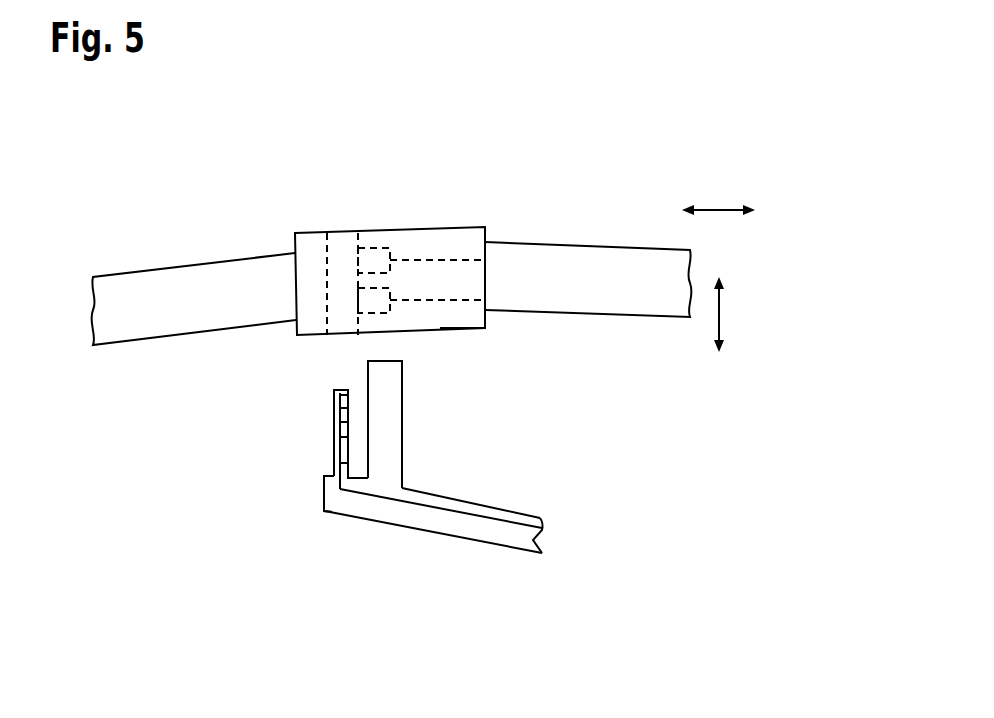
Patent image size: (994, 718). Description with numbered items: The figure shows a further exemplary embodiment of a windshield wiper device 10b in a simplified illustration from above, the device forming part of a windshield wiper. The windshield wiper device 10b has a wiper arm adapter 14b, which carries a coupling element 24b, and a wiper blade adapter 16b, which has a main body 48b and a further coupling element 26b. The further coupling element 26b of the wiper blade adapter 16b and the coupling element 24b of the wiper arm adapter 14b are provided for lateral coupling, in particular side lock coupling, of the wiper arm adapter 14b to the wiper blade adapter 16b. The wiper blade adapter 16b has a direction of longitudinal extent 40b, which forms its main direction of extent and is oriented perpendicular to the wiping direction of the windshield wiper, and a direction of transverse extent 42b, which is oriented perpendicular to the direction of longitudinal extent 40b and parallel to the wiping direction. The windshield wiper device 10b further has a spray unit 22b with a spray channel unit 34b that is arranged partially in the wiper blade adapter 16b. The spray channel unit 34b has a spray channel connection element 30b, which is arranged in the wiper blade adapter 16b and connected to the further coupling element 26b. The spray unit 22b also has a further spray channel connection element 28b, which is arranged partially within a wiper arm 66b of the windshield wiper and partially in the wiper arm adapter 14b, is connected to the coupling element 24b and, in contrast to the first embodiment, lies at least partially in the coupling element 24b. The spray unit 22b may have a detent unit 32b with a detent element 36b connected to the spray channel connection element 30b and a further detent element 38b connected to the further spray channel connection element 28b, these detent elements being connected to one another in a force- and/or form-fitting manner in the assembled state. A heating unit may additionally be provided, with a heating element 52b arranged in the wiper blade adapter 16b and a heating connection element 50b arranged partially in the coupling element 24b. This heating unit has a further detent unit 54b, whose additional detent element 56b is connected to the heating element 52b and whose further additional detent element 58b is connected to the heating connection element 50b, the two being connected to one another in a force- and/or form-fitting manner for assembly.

The windshield wiper device 10b is at (634, 128).
The wiper arm adapter 14b is at (331, 515).
The wiper blade adapter 16b is at (473, 242).
The spray unit 22b is at (403, 214).
The coupling element 24b is at (345, 395).
The further coupling element 26b is at (327, 255).
The further spray channel connection element 28b is at (338, 500).
The spray channel connection element 30b is at (440, 258).
The detent unit 32b is at (454, 410).
The spray channel unit 34b is at (462, 238).
The detent element 36b is at (343, 415).
The further detent element 38b is at (358, 250).
The direction of longitudinal extent 40b is at (718, 208).
The direction of transverse extent 42b is at (723, 313).
The main body 48b is at (472, 315).
The heating connection element 50b is at (493, 515).
The heating element 52b is at (445, 301).
The further detent unit 54b is at (454, 446).
The additional detent element 56b is at (370, 318).
The further additional detent element 58b is at (343, 448).
The wiper arm 66b is at (415, 520).